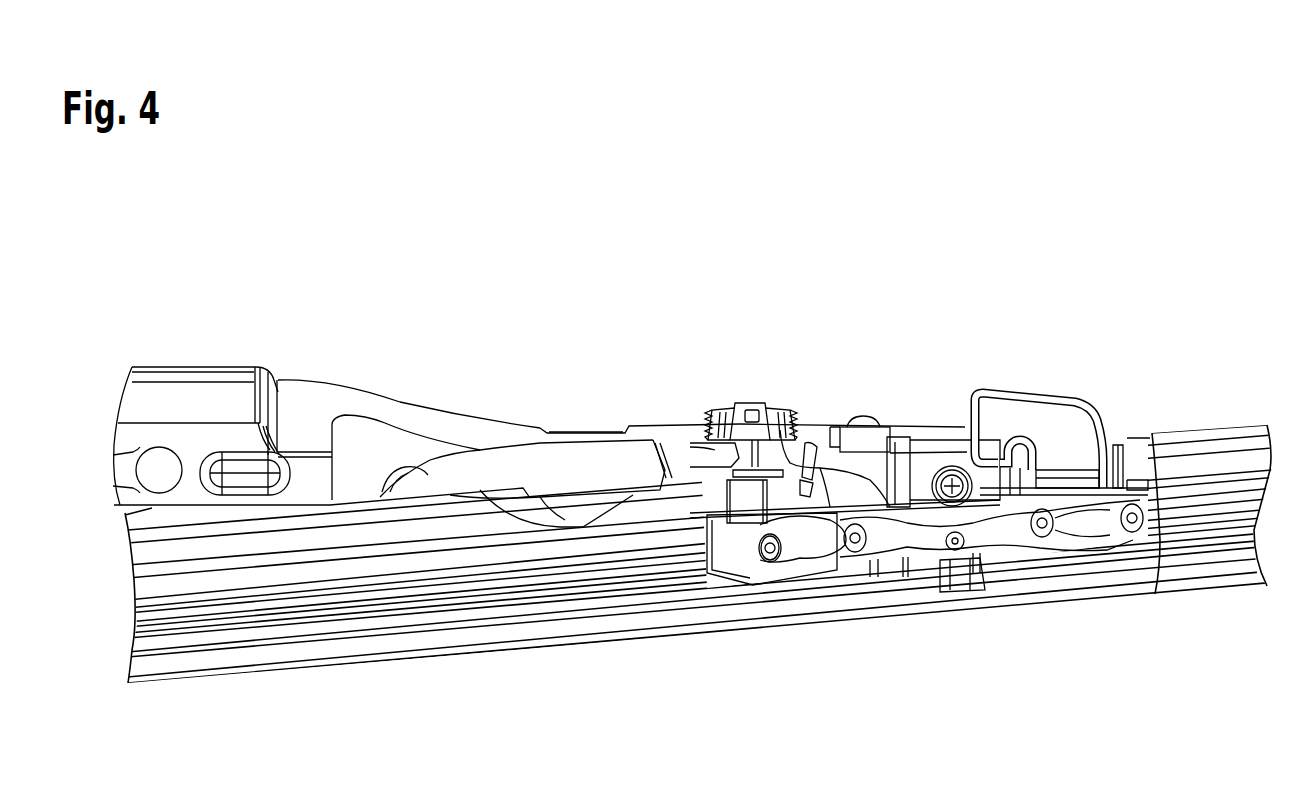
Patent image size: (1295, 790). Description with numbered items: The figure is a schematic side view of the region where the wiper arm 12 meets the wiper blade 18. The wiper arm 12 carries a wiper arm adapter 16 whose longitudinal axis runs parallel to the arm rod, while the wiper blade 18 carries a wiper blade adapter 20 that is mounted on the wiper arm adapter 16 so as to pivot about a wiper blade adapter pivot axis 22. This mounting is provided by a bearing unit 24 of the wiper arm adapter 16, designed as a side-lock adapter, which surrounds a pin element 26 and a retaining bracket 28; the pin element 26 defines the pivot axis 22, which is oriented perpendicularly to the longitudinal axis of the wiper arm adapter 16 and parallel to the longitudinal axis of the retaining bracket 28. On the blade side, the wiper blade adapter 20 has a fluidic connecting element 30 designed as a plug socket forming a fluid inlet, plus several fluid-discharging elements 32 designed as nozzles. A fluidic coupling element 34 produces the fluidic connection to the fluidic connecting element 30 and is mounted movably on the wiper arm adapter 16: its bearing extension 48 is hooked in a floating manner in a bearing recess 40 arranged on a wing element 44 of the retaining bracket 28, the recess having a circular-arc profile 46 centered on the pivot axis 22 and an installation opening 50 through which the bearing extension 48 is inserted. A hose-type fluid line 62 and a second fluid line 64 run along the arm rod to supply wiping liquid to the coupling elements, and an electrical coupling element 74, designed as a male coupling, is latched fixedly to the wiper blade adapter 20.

The wiper arm 12 is at (187, 340).
The wiper arm adapter 16 is at (644, 413).
The wiper blade 18 is at (229, 698).
The wiper blade adapter 20 is at (1038, 555).
The wiper blade adapter pivot axis 22 is at (953, 555).
The bearing unit 24 is at (940, 415).
The pin element 26 is at (982, 553).
The retaining bracket 28 is at (862, 437).
The fluidic connecting element 30 is at (752, 495).
The fluid-discharging elements 32 is at (1072, 537).
The fluidic coupling element 34 is at (758, 405).
The bearing recess 40 is at (838, 495).
The wing element 44 is at (880, 500).
The profile 46 is at (814, 450).
The bearing extension 48 is at (862, 480).
The installation opening 50 is at (774, 458).
The fluid line 62 is at (536, 460).
The second fluid line 64 is at (566, 503).
The electrical coupling element 74 is at (1055, 430).